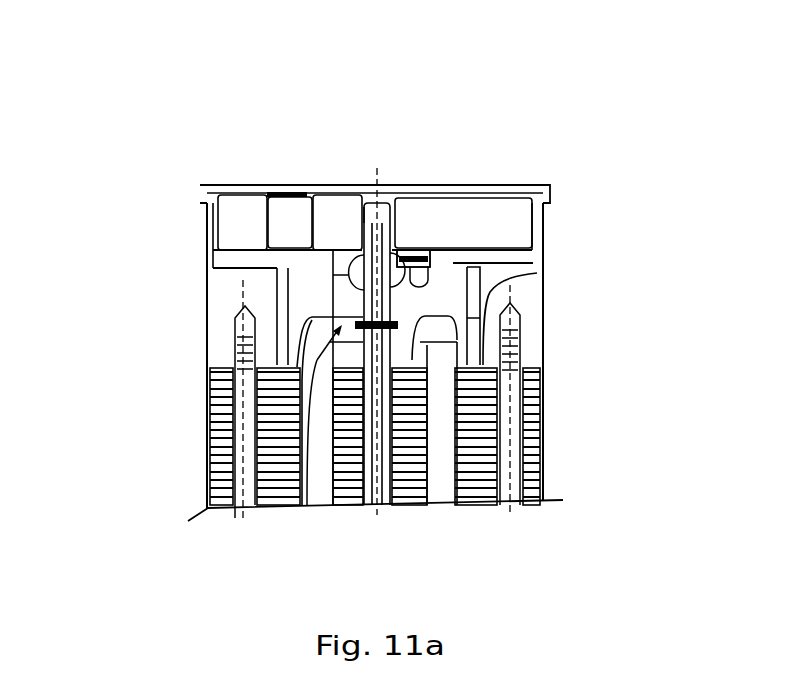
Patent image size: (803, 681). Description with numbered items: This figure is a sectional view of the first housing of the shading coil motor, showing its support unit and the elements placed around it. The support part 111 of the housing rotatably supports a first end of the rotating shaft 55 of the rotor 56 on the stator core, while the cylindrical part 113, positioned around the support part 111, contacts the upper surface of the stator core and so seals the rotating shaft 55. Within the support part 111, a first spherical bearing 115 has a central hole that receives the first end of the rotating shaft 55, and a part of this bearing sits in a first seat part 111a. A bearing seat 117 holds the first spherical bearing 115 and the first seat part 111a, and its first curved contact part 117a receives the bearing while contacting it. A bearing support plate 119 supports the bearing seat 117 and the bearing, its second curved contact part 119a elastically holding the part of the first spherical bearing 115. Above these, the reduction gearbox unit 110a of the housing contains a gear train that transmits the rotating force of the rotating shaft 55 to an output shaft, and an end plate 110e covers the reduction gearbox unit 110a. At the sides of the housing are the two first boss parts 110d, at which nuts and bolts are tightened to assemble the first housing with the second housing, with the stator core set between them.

The reduction gearbox unit 110a is at (243, 213).
The first boss parts 110d is at (205, 325).
The end plate 110e is at (330, 186).
The support part 111 is at (257, 427).
The first seat part 111a is at (510, 262).
The cylindrical part 113 is at (482, 276).
The first spherical bearing 115 is at (396, 246).
The bearing seat 117 is at (412, 355).
The first curved contact part 117a is at (431, 282).
The bearing support plate 119 is at (428, 250).
The second curved contact part 119a is at (413, 250).
The rotating shaft 55 is at (381, 500).
The rotor 56 is at (533, 263).